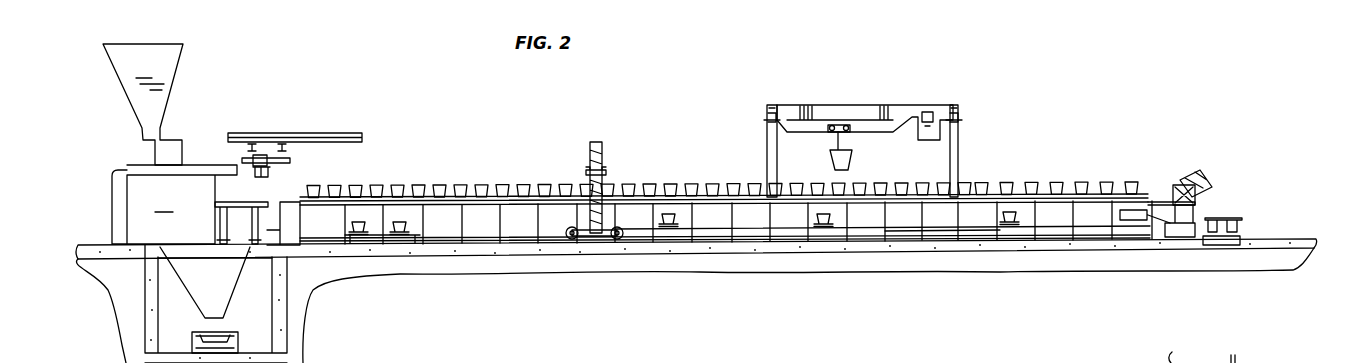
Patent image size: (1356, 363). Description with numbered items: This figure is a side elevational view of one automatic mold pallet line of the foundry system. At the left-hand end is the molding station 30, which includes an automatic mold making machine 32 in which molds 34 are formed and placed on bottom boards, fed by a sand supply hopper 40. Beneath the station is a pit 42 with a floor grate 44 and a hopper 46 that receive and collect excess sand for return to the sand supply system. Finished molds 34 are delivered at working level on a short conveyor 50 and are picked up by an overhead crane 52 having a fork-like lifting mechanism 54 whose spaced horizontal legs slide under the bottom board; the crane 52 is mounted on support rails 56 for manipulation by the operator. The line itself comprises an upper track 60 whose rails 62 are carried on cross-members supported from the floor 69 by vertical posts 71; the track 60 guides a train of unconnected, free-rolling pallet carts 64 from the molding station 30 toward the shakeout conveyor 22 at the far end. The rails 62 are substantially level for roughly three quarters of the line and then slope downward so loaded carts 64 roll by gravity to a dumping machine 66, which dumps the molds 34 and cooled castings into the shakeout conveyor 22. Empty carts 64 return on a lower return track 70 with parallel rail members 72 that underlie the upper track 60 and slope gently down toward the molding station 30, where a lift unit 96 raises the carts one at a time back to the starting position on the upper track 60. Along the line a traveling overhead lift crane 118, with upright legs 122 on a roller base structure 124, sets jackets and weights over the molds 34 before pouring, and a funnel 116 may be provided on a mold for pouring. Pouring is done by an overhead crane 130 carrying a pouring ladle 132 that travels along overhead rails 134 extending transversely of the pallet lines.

The shakeout conveyor 22 is at (1230, 205).
The molding station 30 is at (170, 144).
The automatic mold making machine 32 is at (174, 204).
The molds 34 is at (487, 185).
The sand supply hopper 40 is at (168, 72).
The pit 42 is at (260, 327).
The floor grate 44 is at (195, 252).
The hopper 46 is at (182, 283).
The short conveyor 50 is at (252, 201).
The overhead crane 52 is at (295, 143).
The fork-like lifting mechanism 54 is at (268, 172).
The support rails 56 is at (250, 148).
The upper track 60 is at (565, 190).
The track rails 62 is at (833, 229).
The pallet carts 64 is at (482, 206).
The dumping machine 66 is at (1203, 180).
The floor 69 is at (1270, 238).
The lower return track 70 is at (750, 234).
The vertical posts 71 is at (547, 222).
The rail members 72 is at (902, 231).
The lift unit 96 is at (290, 228).
The funnel 116 is at (1202, 350).
The traveling overhead lift crane 118 is at (603, 146).
The upright legs 122 is at (605, 168).
The roller base structure 124 is at (608, 213).
The overhead crane 130 is at (860, 127).
The pouring ladle 132 is at (850, 157).
The overhead rails 134 is at (766, 121).